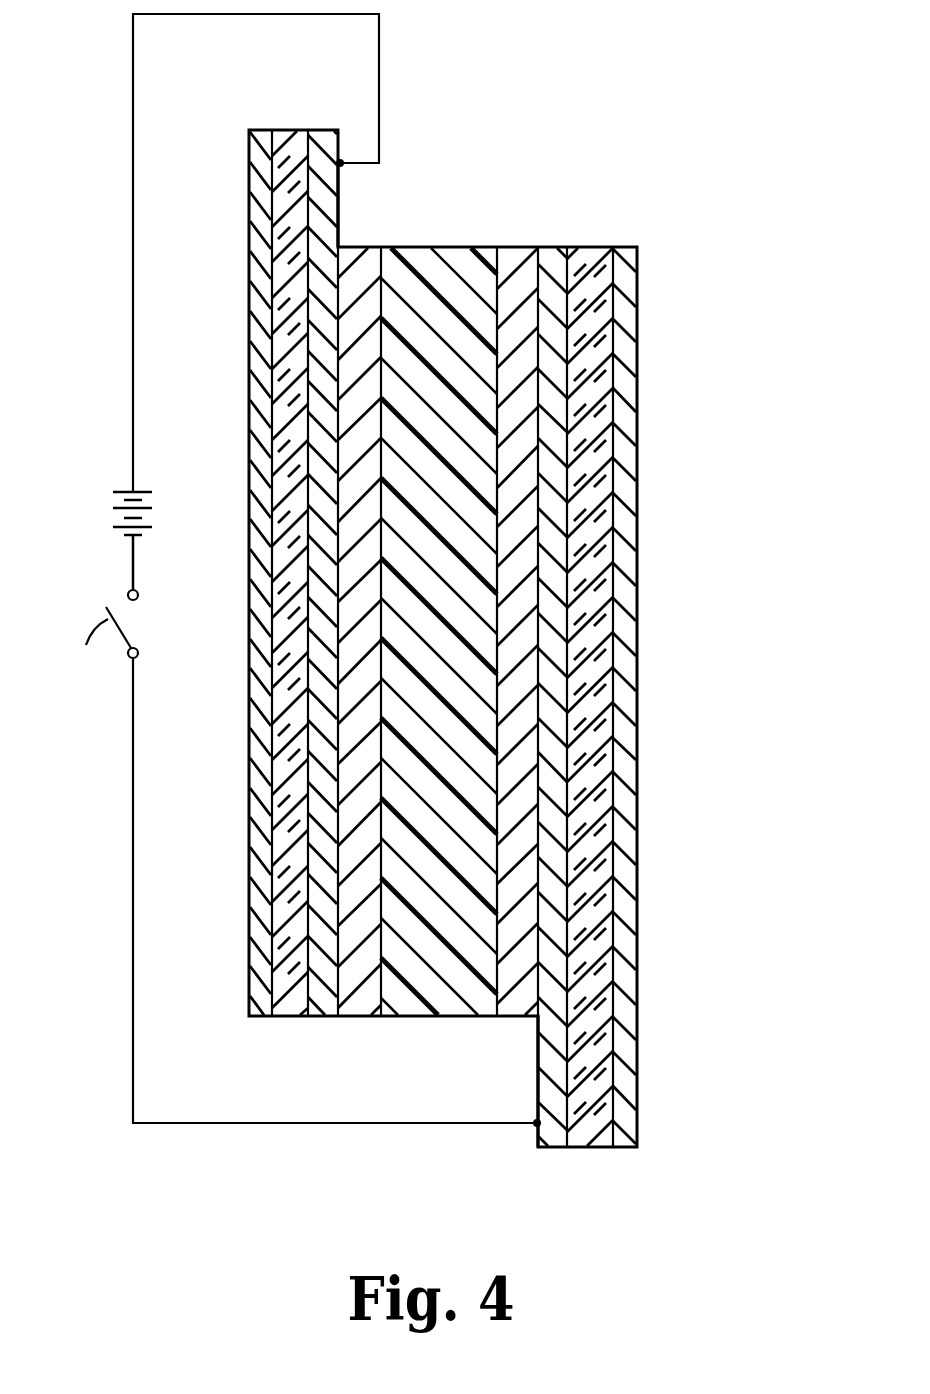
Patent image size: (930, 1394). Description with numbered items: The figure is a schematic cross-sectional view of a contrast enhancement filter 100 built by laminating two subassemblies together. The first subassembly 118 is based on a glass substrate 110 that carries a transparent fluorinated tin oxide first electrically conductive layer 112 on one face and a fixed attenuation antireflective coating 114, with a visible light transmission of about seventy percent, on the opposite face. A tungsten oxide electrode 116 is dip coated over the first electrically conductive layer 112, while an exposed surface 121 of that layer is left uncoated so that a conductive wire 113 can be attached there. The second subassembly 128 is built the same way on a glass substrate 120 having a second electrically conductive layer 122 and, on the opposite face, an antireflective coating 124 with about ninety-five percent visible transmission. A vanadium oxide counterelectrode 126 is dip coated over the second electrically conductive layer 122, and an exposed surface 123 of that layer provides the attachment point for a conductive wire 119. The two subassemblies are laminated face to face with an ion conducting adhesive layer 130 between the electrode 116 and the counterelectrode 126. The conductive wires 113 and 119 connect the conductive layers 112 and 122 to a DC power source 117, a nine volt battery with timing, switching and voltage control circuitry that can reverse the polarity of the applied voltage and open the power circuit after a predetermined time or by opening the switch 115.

The electrochromic device 100 is at (743, 492).
The substrate 110 is at (588, 928).
The first electrically conductive layer 112 is at (552, 1110).
The conductive wire 113 is at (227, 1125).
The fixed attenuation antireflective coating 114 is at (625, 625).
The switch 115 is at (95, 639).
The electrode 116 is at (522, 323).
The DC power source 117 is at (120, 488).
The subassembly 118 is at (635, 242).
The conductive wire 119 is at (133, 393).
The substrate 120 is at (293, 147).
The exposed surface 121 is at (536, 1071).
The second electrically conductive layer 122 is at (322, 147).
The exposed surface 123 is at (343, 203).
The antireflective coating 124 is at (262, 340).
The counterelectrode 126 is at (368, 962).
The subassembly 128 is at (244, 1022).
The ion conducting adhesive layer 130 is at (432, 270).